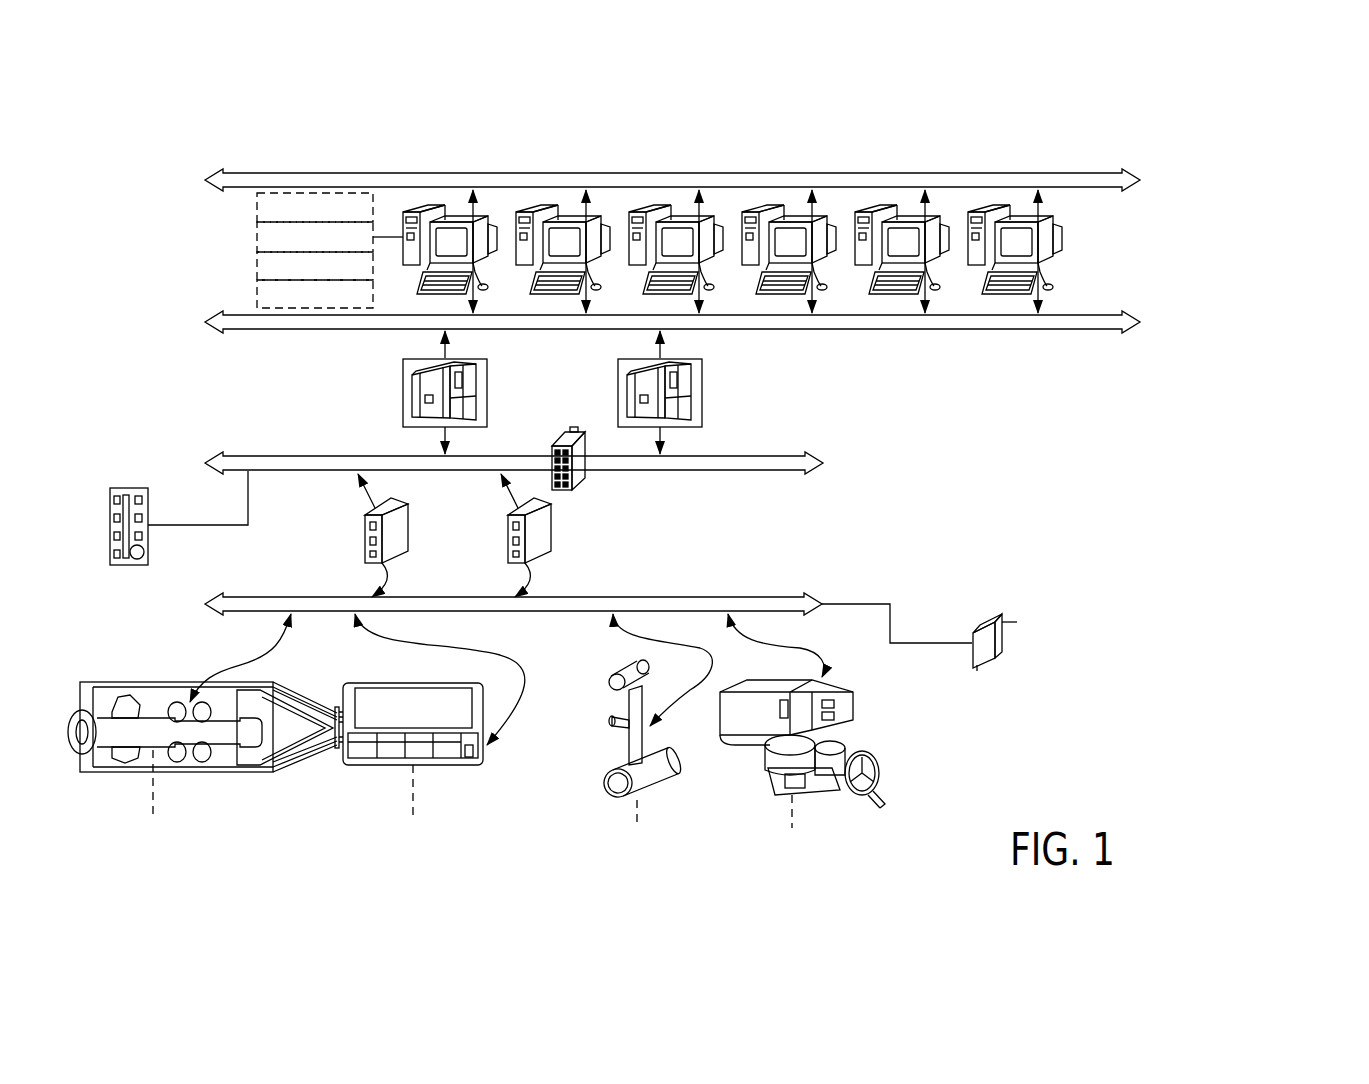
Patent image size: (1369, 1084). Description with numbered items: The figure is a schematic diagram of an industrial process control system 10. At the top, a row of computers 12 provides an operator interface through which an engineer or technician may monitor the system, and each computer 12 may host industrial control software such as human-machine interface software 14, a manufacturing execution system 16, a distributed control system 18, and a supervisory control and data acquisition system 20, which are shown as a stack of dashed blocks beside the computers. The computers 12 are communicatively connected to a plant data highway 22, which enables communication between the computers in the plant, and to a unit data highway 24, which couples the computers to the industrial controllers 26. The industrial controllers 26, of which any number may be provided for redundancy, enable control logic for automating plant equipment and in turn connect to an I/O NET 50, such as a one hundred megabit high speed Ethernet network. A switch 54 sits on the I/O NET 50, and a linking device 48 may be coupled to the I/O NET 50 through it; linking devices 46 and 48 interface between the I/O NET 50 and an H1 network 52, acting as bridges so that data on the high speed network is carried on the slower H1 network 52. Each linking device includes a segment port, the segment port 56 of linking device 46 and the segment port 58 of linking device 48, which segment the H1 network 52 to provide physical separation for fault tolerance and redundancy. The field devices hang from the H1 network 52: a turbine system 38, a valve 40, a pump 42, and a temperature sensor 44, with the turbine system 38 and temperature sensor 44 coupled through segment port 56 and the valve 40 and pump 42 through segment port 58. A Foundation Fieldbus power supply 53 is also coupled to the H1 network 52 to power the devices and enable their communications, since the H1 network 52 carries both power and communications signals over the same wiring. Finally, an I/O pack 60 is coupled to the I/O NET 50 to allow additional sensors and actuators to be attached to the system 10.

The industrial process control system 10 is at (1272, 176).
The computer 12 is at (420, 208).
The human-machine interface (HMI) software 14 is at (257, 209).
The manufacturing execution system (MES) 16 is at (257, 237).
The distributed control system (DCS) 18 is at (257, 265).
The supervisor control and data acquisition (SCADA) system 20 is at (257, 294).
The plant data highway 22 is at (1136, 176).
The unit data highway 24 is at (1136, 316).
The industrial controller 26 is at (488, 392).
The turbine system 38 is at (232, 782).
The valve 40 is at (645, 790).
The pump 42 is at (880, 787).
The temperature sensor 44 is at (440, 765).
The linking device 46 is at (405, 530).
The linking device 48 is at (548, 530).
The I/O NET 50 is at (821, 470).
The H1 network 52 is at (815, 598).
The Foundation Fieldbus power supply 53 is at (986, 619).
The switch 54 is at (582, 488).
The segment port 56 is at (356, 563).
The segment port 58 is at (499, 563).
The I/O pack 60 is at (127, 488).